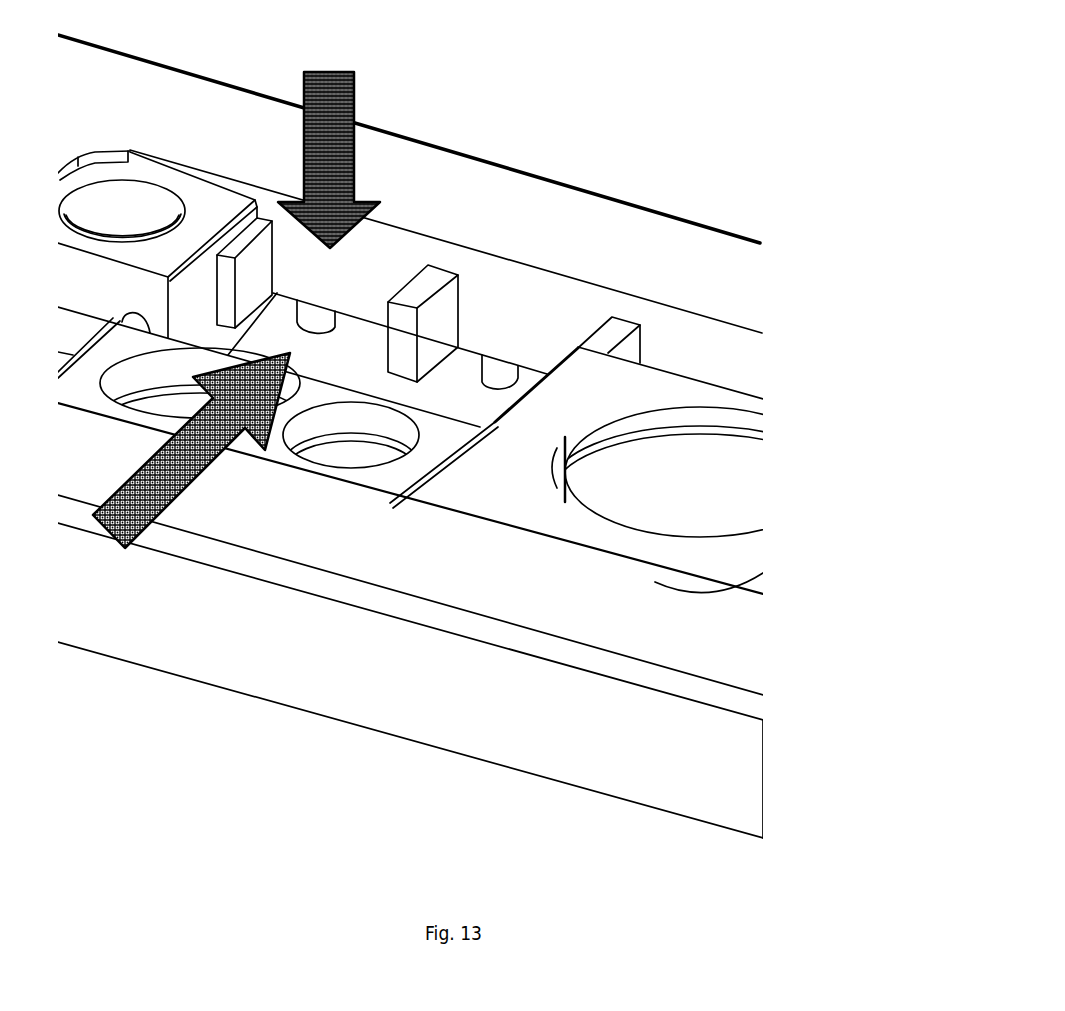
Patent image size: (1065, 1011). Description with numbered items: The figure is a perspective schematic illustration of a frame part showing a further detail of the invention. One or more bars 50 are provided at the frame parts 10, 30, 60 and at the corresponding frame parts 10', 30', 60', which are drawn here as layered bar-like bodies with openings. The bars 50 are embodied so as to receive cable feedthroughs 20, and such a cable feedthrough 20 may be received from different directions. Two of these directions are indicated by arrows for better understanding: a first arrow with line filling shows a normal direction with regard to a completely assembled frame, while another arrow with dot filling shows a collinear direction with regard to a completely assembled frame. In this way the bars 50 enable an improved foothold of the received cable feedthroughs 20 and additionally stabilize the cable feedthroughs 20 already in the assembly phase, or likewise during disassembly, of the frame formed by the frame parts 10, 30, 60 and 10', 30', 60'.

The frame part 10 is at (414, 317).
The frame part 30 is at (414, 317).
The frame part 60 is at (414, 317).
The frame part 10' is at (410, 666).
The frame part 30' is at (410, 666).
The frame part 60' is at (410, 666).
The cable feedthrough 20 is at (510, 508).
The bar 50 is at (596, 322).